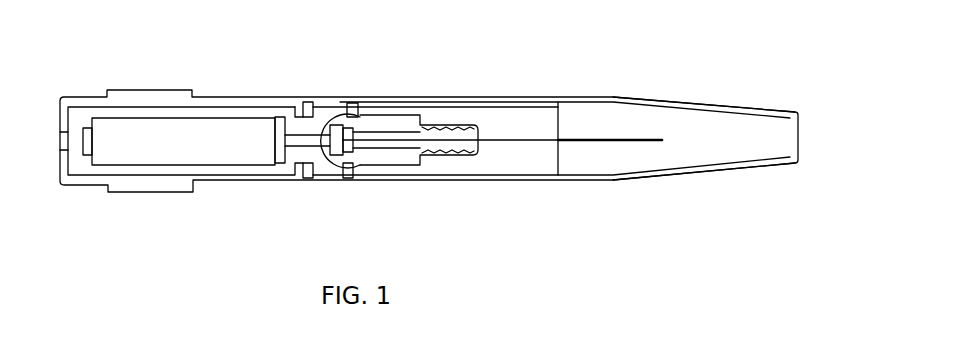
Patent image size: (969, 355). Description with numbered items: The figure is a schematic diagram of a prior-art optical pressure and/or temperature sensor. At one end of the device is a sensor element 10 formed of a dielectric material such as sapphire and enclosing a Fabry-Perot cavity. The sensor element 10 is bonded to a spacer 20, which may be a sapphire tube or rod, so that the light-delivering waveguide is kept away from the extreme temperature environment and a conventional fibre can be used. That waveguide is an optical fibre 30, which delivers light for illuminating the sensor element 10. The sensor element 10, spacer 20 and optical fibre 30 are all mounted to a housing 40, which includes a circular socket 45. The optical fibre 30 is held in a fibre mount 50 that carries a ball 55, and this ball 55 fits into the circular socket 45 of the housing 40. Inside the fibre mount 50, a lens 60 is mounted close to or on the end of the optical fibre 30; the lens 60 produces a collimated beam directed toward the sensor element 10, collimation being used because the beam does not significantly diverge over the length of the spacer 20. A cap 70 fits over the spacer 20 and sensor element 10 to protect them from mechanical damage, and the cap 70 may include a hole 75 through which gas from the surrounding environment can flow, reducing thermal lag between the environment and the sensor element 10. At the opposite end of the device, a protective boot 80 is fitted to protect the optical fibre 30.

The sensor element 10 is at (96, 110).
The spacer 20 is at (145, 130).
The optical fibre 30 is at (541, 139).
The housing 40 is at (321, 106).
The circular socket 45 is at (336, 117).
The fibre mount 50 is at (358, 107).
The ball 55 is at (344, 160).
The lens 60 is at (360, 150).
The cap 70 is at (72, 97).
The hole 75 is at (60, 149).
The protective boot 80 is at (645, 170).